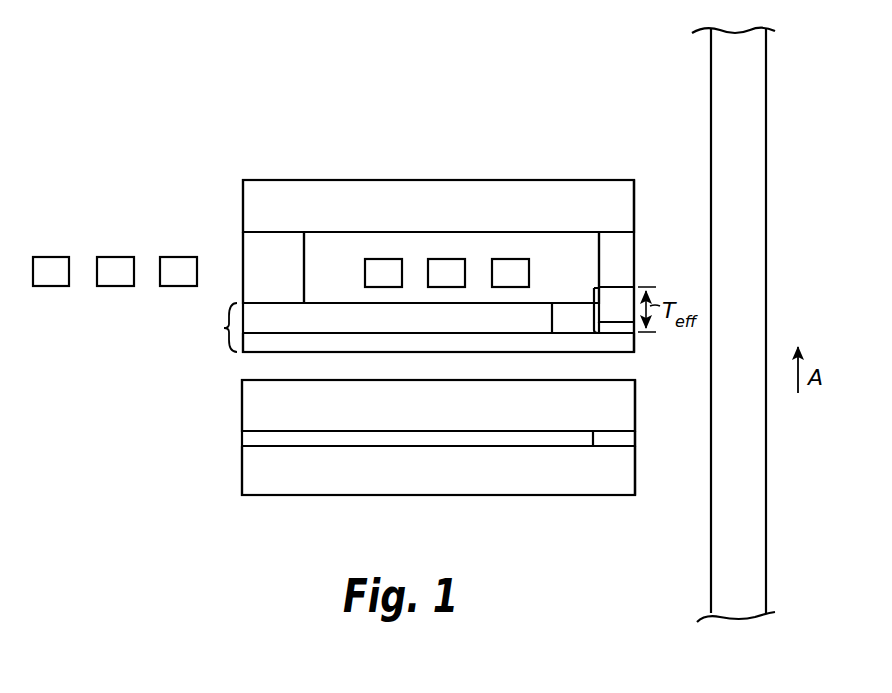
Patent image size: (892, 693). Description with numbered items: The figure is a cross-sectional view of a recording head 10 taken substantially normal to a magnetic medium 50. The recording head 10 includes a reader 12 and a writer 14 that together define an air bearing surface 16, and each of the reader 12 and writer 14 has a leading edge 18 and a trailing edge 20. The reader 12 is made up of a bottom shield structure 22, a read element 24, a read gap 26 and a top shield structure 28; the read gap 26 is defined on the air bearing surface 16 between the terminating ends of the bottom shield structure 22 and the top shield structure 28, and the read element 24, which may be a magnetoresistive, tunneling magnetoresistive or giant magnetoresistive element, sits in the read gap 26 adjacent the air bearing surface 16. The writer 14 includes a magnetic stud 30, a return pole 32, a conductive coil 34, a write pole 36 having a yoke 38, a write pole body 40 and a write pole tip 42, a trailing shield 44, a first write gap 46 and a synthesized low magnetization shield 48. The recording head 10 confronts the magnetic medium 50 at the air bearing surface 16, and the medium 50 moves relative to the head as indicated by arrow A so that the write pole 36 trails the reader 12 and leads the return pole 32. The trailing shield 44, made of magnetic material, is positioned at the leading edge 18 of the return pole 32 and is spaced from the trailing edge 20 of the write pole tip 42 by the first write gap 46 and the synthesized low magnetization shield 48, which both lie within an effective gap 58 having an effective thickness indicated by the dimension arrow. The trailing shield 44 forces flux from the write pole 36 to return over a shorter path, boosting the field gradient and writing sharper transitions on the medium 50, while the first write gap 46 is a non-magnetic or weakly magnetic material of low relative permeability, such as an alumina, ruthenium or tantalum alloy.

The recording head 10 is at (239, 135).
The reader 12 is at (208, 420).
The writer 14 is at (224, 200).
The air bearing surface 16 is at (645, 200).
The leading edge 18 is at (510, 504).
The trailing edge 20 is at (585, 176).
The bottom shield structure 22 is at (250, 473).
The read element 24 is at (617, 437).
The read gap 26 is at (246, 438).
The top shield structure 28 is at (263, 387).
The magnetic stud 30 is at (243, 245).
The return pole 32 is at (296, 210).
The conductive coil 34 is at (110, 243).
The write pole 36 is at (217, 327).
The yoke 38 is at (335, 318).
The write pole body 40 is at (354, 340).
The write pole tip 42 is at (627, 343).
The trailing shield 44 is at (622, 252).
The first write gap 46 is at (615, 329).
The synthesized low magnetization shield 48 is at (613, 300).
The magnetic medium 50 is at (779, 125).
The effective gap 58 is at (593, 300).